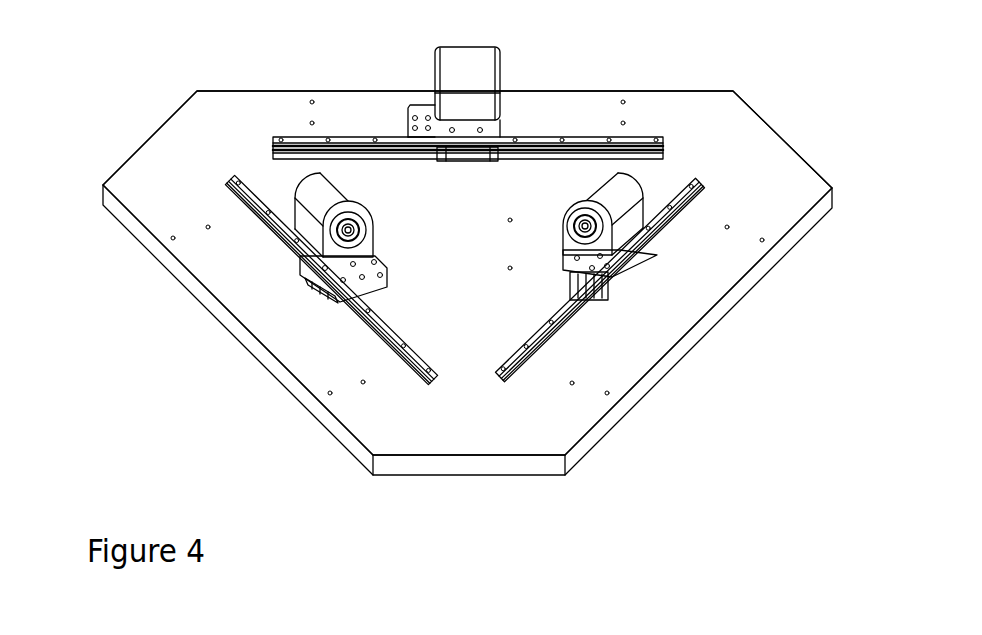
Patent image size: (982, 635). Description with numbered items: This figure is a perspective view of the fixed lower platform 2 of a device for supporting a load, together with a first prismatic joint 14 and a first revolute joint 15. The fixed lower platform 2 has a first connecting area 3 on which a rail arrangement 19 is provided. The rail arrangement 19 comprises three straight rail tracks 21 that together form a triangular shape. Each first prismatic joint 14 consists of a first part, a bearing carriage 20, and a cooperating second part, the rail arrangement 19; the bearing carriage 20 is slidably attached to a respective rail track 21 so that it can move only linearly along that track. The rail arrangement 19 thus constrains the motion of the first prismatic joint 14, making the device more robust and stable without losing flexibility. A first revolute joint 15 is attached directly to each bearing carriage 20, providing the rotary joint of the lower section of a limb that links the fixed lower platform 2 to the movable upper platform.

The fixed lower platform 2 is at (131, 155).
The first connecting area 3 is at (188, 135).
The first prismatic joint 14 is at (662, 261).
The first revolute joint 15 is at (635, 190).
The rail arrangement 19 is at (700, 210).
The bearing carriage 20 is at (610, 280).
The rail track 21 is at (425, 382).